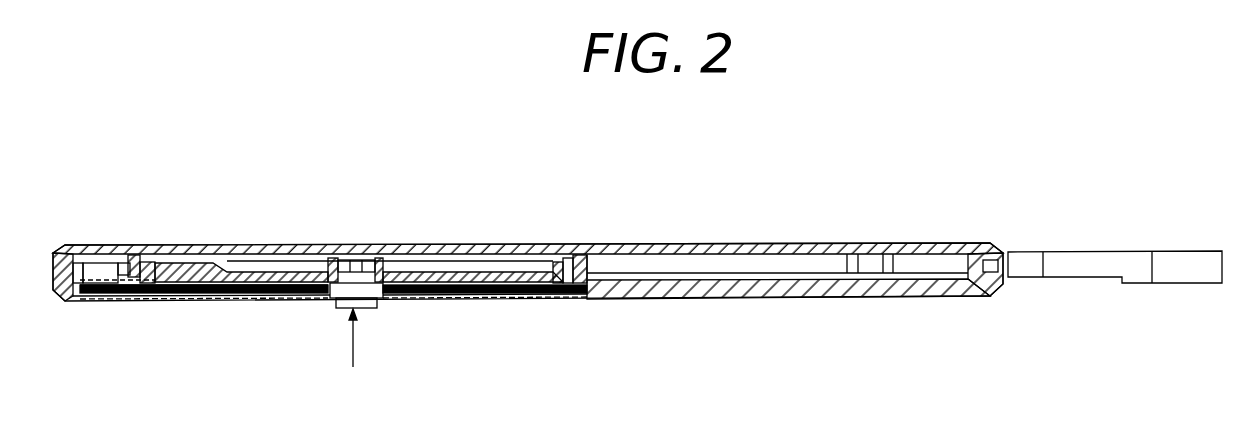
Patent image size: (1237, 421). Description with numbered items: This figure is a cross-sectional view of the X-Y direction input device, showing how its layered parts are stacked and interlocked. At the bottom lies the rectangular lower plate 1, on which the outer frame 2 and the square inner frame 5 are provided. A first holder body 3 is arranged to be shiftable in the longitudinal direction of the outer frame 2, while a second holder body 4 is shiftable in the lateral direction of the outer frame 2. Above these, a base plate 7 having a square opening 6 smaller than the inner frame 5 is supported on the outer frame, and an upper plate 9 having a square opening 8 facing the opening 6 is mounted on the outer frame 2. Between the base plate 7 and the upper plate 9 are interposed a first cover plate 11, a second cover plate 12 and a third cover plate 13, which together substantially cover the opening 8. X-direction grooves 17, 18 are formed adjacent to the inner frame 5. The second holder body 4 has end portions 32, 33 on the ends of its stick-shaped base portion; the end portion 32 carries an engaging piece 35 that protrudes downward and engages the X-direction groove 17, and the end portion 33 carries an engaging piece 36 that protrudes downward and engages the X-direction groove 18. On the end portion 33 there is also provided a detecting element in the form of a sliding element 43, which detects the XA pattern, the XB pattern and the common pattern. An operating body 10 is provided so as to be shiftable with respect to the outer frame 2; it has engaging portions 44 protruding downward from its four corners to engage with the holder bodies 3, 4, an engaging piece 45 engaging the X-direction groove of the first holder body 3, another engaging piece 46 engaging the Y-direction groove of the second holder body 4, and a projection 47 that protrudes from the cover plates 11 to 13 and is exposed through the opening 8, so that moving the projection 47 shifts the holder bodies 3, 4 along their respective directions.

The lower plate 1 is at (748, 245).
The outer frame 2 is at (993, 247).
The first holder body 3 is at (350, 243).
The second holder body 4 is at (490, 243).
The inner frame 5 is at (587, 272).
The opening 6 is at (467, 298).
The base plate 7 is at (545, 298).
The opening 8 is at (240, 301).
The upper plate 9 is at (200, 301).
The operating body 10 is at (352, 351).
The first cover plate 11 is at (512, 298).
The second cover plate 12 is at (558, 298).
The third cover plate 13 is at (587, 300).
The X-direction groove 17 is at (540, 243).
The X-direction groove 18 is at (133, 245).
The end portion 32 is at (573, 243).
The end portion 33 is at (193, 245).
The engaging piece 35 is at (558, 243).
The engaging piece 36 is at (167, 245).
The sliding element 43 is at (163, 301).
The engaging portions 44 is at (330, 243).
The engaging piece 45 is at (367, 243).
The engaging piece 46 is at (328, 300).
The projection 47 is at (377, 308).